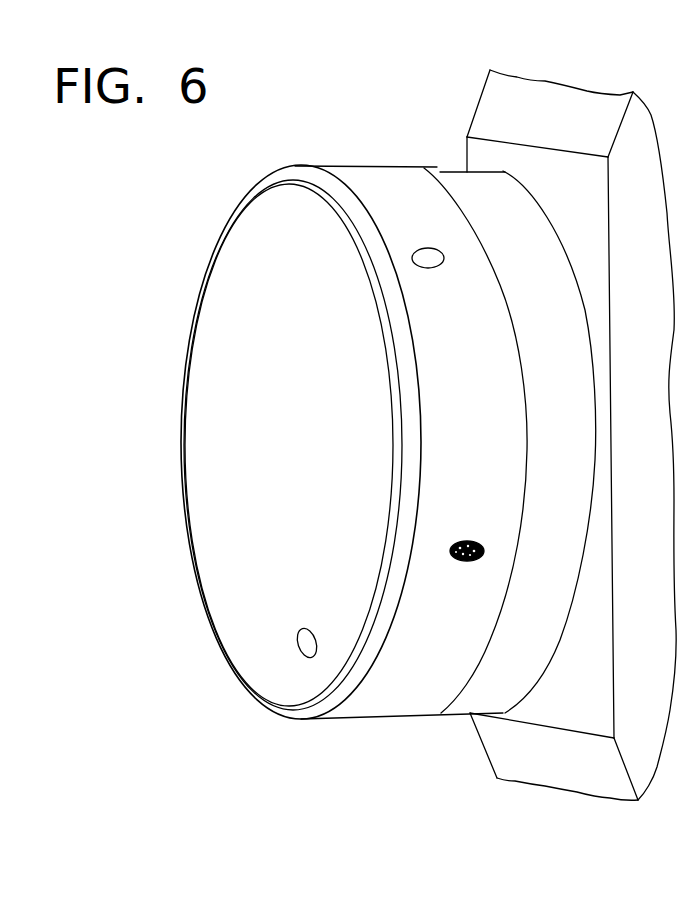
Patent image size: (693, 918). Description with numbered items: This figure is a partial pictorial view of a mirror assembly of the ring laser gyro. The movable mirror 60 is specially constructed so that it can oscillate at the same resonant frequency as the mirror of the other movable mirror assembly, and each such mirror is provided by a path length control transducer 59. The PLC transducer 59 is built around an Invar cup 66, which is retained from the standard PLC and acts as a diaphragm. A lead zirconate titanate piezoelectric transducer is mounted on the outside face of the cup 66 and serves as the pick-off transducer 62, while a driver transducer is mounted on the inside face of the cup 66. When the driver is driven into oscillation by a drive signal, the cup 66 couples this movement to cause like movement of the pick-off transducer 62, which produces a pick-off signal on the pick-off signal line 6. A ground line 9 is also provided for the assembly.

The path length control transducer 59 is at (343, 724).
The pick-off transducer 62 is at (222, 368).
The movable mirror 60 is at (452, 172).
The Invar cup 66 is at (443, 683).
The ground line 9 is at (467, 561).
The pick-off signal line 6 is at (557, 86).